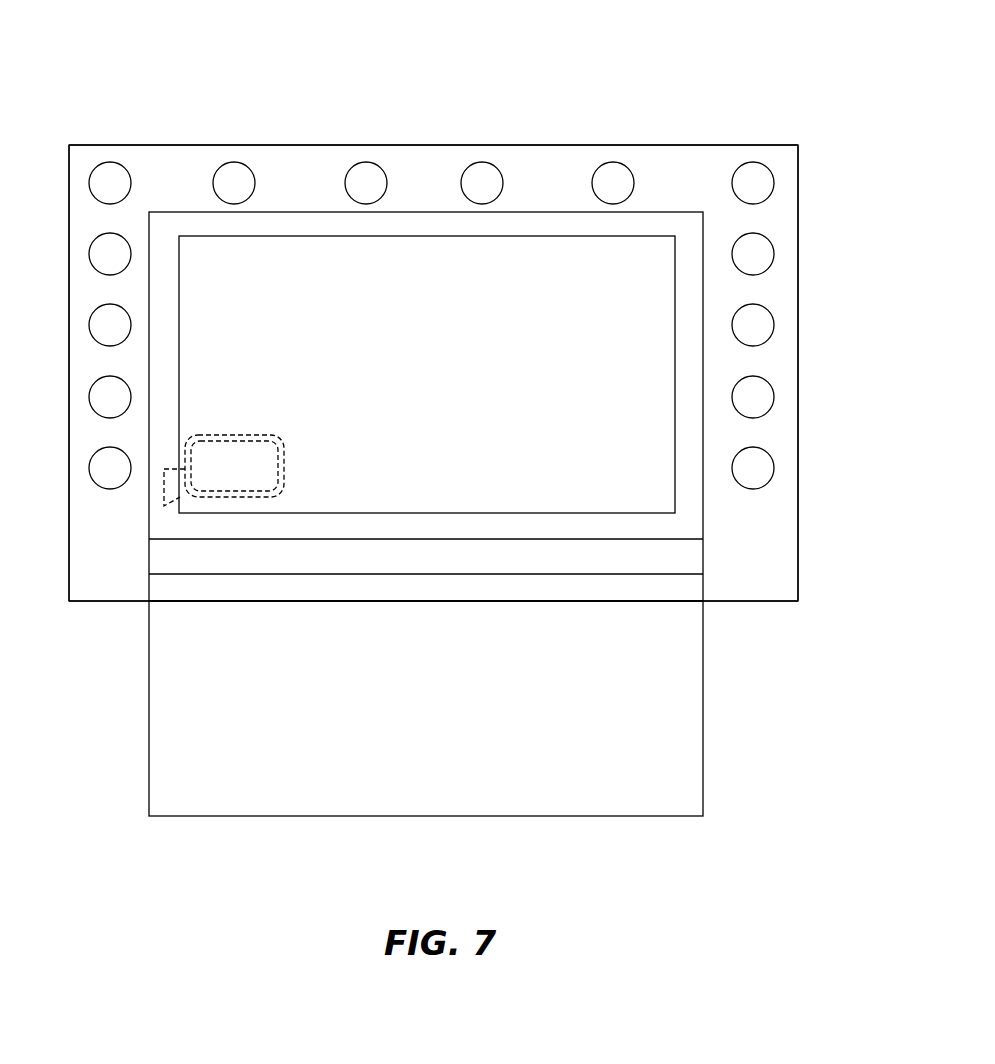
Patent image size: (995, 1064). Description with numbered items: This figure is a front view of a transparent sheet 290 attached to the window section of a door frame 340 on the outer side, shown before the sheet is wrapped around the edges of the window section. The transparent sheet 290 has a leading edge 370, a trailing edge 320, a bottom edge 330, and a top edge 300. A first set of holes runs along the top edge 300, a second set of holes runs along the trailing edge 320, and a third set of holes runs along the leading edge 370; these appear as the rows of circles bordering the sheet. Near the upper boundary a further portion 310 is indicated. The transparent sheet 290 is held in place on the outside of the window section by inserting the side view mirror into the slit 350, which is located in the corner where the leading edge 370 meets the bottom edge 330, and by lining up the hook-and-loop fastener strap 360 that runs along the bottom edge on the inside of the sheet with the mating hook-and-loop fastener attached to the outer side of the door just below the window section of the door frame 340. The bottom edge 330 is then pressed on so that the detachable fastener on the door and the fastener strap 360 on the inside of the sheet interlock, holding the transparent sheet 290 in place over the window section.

The transparent sheet 290 is at (253, 110).
The top edge 300 is at (362, 145).
The top frame portion 310 is at (575, 145).
The trailing edge 320 is at (798, 180).
The bottom edge 330 is at (712, 603).
The door frame 340 is at (378, 792).
The slit 350 is at (268, 439).
The hook-and-loop fastener strap 360 is at (357, 557).
The leading edge 370 is at (69, 563).